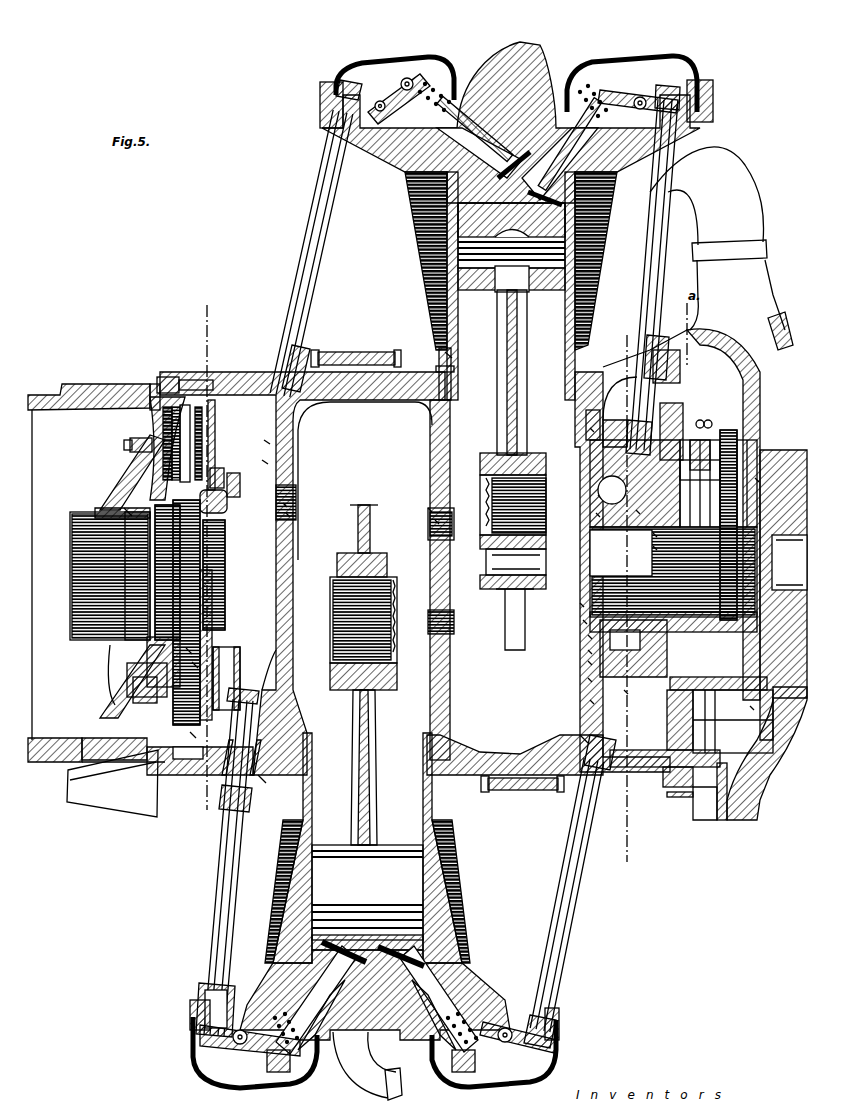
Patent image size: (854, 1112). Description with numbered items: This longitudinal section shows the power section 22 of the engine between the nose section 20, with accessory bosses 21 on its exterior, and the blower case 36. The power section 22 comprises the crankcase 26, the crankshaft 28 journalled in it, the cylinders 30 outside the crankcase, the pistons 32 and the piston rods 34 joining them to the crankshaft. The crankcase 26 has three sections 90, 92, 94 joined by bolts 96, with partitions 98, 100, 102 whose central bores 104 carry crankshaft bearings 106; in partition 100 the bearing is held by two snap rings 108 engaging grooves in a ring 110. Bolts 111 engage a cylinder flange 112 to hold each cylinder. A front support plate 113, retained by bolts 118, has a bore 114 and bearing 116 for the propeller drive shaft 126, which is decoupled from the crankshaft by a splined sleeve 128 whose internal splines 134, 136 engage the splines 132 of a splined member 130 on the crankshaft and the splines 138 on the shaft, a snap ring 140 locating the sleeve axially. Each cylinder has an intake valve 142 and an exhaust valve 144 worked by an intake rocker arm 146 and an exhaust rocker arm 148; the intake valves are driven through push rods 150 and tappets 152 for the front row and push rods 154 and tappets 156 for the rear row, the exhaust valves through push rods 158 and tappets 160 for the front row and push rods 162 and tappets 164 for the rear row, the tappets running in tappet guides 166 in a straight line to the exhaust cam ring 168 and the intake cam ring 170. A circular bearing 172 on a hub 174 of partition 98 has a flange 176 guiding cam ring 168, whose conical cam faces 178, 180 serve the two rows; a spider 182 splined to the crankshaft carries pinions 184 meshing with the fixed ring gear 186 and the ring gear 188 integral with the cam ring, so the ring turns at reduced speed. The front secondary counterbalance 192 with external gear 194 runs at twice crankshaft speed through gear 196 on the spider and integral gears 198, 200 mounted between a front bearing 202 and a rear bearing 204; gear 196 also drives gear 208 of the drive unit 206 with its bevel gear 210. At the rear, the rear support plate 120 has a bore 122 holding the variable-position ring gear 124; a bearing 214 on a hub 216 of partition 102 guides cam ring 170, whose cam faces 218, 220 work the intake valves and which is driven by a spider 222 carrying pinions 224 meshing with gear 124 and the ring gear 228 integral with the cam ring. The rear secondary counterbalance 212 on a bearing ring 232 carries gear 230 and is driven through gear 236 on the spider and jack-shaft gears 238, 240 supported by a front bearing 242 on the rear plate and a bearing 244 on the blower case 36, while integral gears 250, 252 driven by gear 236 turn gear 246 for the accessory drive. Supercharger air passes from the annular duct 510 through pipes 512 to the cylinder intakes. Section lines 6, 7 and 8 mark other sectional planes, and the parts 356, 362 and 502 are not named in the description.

The housing 20 is at (80, 393).
The mounting block 21 is at (118, 805).
The engine 22 is at (531, 804).
The crankcase 26 is at (460, 747).
The crankshaft 28 is at (457, 574).
The cylinder 30 is at (420, 286).
The piston 32 is at (475, 290).
The connecting rod 34 is at (525, 326).
The flange 36 is at (783, 318).
The crankcase upper wall 90 is at (240, 374).
The bolt 92 is at (440, 364).
The crankcase right wall 94 is at (603, 367).
The bolt 96 is at (347, 356).
The crankcase lower wall 98 is at (288, 707).
The crank web 100 is at (448, 677).
The bearing seat 102 is at (592, 430).
The bearing 104 is at (286, 505).
The bearing race 106 is at (288, 515).
The bearing 108 is at (431, 625).
The bearing 110 is at (430, 514).
The center web 111 is at (430, 411).
The cylinder flange 112 is at (447, 352).
The housing wall 113 is at (112, 650).
The housing web 114 is at (100, 512).
The housing web 116 is at (128, 512).
The bolt 118 is at (176, 383).
The gear housing 120 is at (680, 757).
The bearing 122 is at (590, 680).
The gear 124 is at (655, 535).
The gear 126 is at (83, 584).
The housing wall 128 is at (155, 652).
The gear 130 is at (155, 553).
The shaft 132 is at (163, 565).
The hub 134 is at (167, 665).
The gear 136 is at (128, 521).
The gear 138 is at (138, 537).
The web 140 is at (113, 500).
The valve 142 is at (556, 100).
The cylinder head 144 is at (443, 133).
The rocker arm 146 is at (625, 82).
The rocker arm 148 is at (380, 106).
The push rod 150 is at (589, 876).
The bearing 152 is at (592, 702).
The push rod 154 is at (655, 242).
The push rod guide 156 is at (633, 395).
The push rod 158 is at (223, 869).
The tappet 160 is at (267, 463).
The push rod 162 is at (310, 247).
The tappet guide 164 is at (268, 443).
The bolt 166 is at (588, 417).
The bearing 168 is at (266, 643).
The bearing 170 is at (600, 481).
The crank arm 172 is at (270, 618).
The crank pin 174 is at (270, 632).
The cam 176 is at (247, 500).
The cam 178 is at (245, 490).
The spring 180 is at (263, 660).
The web 182 is at (155, 505).
The bearing 184 is at (288, 493).
The tappet 186 is at (214, 470).
The gear 188 is at (196, 665).
The gear 192 is at (222, 563).
The gear 194 is at (230, 578).
The gear 196 is at (190, 652).
The nut 198 is at (172, 727).
The shaft 200 is at (195, 735).
The web 202 is at (165, 708).
The crank web 204 is at (270, 690).
The clutch plate 206 is at (170, 427).
The clutch plate 208 is at (200, 437).
The bolt 210 is at (133, 442).
The gear 212 is at (747, 460).
The bearing cap 214 is at (546, 557).
The bearing 216 is at (585, 622).
The crank web 218 is at (603, 473).
The bearing 220 is at (590, 652).
The bearing 222 is at (582, 605).
The bearing 224 is at (590, 637).
The gear 228 is at (638, 513).
The cover 230 is at (760, 687).
The gear 232 is at (676, 540).
The gear 236 is at (655, 548).
The passage 238 is at (683, 707).
The outlet 240 is at (747, 730).
The bearing 242 is at (627, 693).
The cover 244 is at (753, 710).
The gear 246 is at (740, 465).
The pump 250 is at (698, 470).
The gear 252 is at (745, 447).
The pump element 356 is at (700, 450).
The gear 362 is at (757, 480).
The cover 502 is at (772, 590).
The accessory housing 510 is at (757, 346).
The intake pipe 512 is at (717, 172).
The section line 6- 6 is at (199, 306).
The section line 7- 7 is at (644, 332).
The section line 8- 8 is at (660, 797).